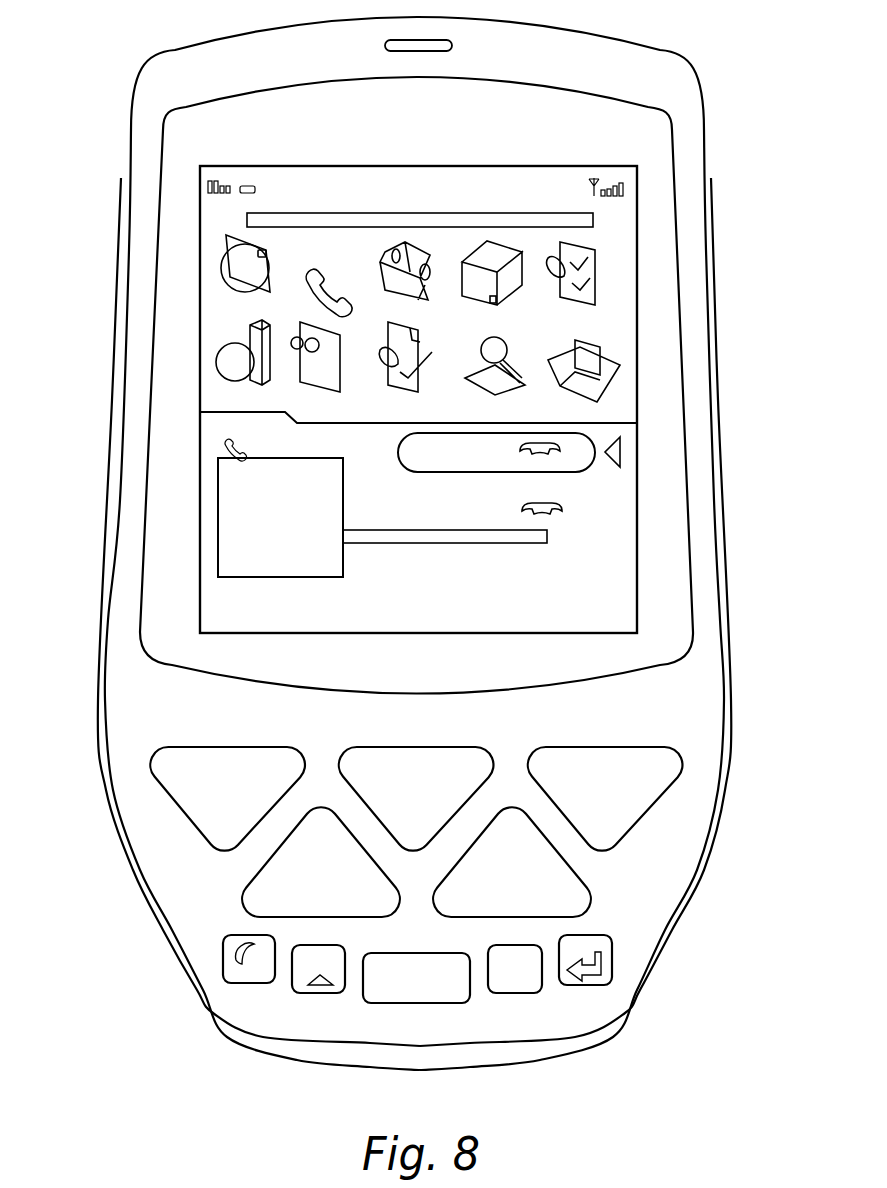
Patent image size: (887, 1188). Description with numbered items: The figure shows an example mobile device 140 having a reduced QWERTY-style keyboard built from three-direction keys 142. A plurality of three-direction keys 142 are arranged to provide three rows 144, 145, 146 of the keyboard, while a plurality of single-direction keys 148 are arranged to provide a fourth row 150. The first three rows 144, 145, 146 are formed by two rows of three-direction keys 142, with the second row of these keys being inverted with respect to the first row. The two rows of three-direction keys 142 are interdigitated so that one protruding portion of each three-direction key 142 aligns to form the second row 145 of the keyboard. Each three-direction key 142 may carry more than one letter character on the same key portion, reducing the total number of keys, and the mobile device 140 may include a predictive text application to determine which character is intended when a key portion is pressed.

The mobile device 140 is at (100, 137).
The three-direction key 142 is at (640, 810).
The first row of the keyboard 144 is at (133, 752).
The second row of the keyboard 145 is at (178, 838).
The third row of the keyboard 146 is at (218, 900).
The single-direction key 148 is at (612, 958).
The fourth row of the keyboard 150 is at (203, 955).